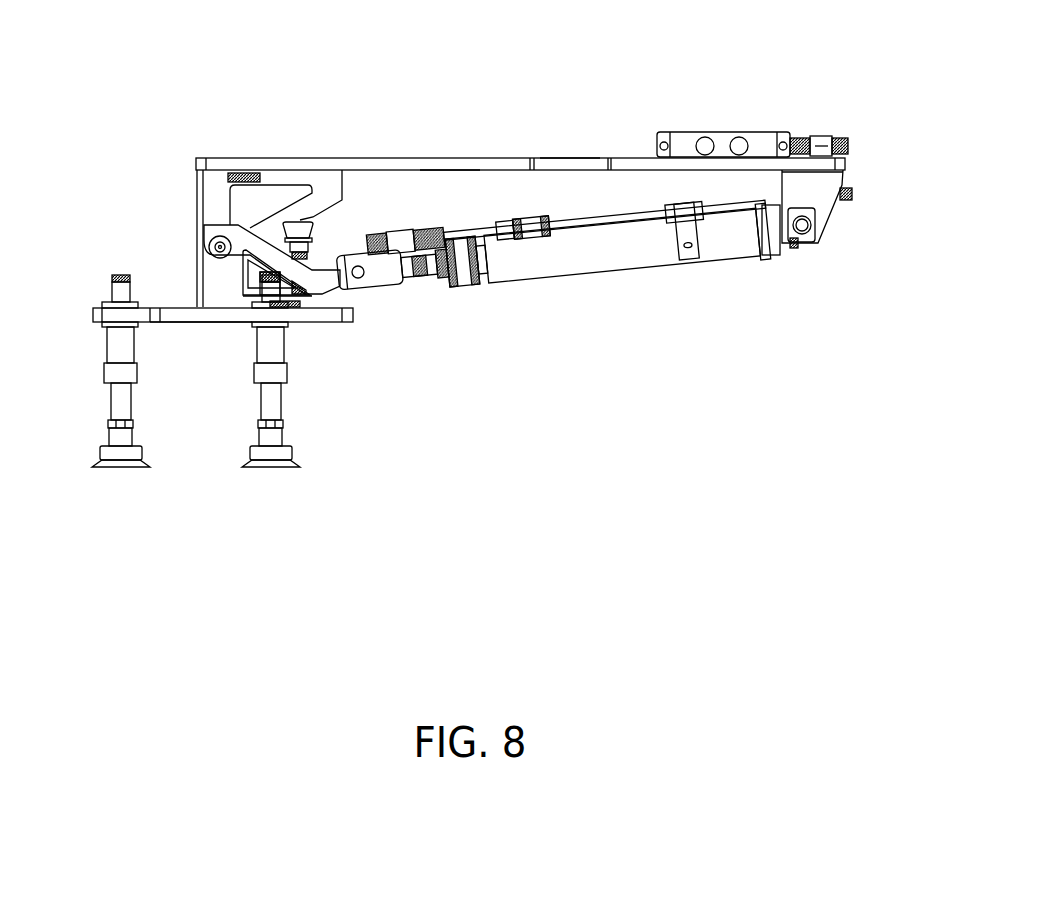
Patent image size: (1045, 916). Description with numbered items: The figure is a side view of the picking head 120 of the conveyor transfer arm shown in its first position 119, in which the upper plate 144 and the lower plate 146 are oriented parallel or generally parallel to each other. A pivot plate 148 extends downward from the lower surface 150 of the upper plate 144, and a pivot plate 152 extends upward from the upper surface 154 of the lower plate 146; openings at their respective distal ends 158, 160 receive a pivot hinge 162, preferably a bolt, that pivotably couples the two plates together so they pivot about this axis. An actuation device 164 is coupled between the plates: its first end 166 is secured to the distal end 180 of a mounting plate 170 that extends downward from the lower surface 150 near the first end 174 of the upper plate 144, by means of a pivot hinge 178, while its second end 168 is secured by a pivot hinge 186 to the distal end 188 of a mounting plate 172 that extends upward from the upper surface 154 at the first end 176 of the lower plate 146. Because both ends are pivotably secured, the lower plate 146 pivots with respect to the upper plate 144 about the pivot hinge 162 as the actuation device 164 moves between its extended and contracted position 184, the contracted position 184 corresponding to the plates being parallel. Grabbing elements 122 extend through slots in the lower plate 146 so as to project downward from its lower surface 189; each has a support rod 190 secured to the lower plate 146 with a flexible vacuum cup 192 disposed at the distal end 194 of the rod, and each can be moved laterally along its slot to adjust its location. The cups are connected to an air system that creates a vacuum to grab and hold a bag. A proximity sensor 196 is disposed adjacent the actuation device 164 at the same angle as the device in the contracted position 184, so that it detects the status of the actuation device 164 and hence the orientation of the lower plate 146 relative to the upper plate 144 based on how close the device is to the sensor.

The first position 119 is at (156, 108).
The picking head 120 is at (416, 158).
The grabbing element 122 is at (108, 348).
The upper plate 144 is at (578, 158).
The lower plate 146 is at (200, 323).
The pivot plate 148 is at (212, 188).
The lower surface 150 is at (440, 173).
The pivot plate 152 is at (333, 300).
The upper surface 154 is at (170, 307).
The distal end 158 is at (252, 238).
The distal end 160 is at (247, 320).
The pivot hinge 162 is at (217, 242).
The actuation device 164 is at (613, 255).
The first end 166 is at (833, 227).
The second end 168 is at (387, 277).
The mounting plate 170 is at (868, 172).
The mounting plate 172 is at (367, 290).
The first end 174 is at (848, 165).
The first end 176 is at (368, 292).
The pivot hinge 178 is at (793, 255).
The distal end 180 is at (813, 247).
The contracted position 184 is at (699, 78).
The pivot hinge 186 is at (340, 272).
The distal end 188 is at (353, 247).
The lower surface 189 is at (165, 322).
The support rod 190 is at (110, 403).
The flexible vacuum cup 192 is at (123, 453).
The distal end 194 is at (103, 442).
The proximity sensor 196 is at (413, 225).